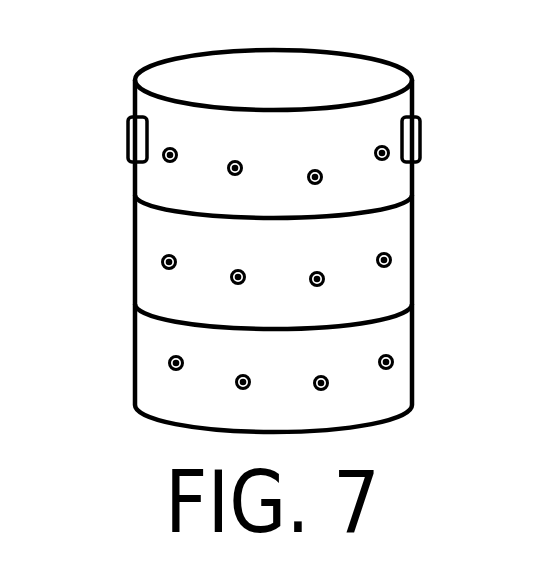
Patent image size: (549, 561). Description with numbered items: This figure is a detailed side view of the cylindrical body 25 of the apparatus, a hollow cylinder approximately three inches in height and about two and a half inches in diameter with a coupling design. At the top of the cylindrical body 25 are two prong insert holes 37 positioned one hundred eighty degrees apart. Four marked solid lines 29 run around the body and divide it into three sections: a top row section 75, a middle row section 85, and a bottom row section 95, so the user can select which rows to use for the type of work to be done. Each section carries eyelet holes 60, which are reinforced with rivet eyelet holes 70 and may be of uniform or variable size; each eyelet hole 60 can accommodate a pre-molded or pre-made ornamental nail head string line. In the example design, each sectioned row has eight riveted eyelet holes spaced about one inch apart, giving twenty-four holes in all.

The cylindrical body 25 is at (275, 238).
The marked solid lines 29 is at (135, 98).
The prong insert holes 37 is at (137, 146).
The eyelet holes 60 is at (392, 262).
The rivet eyelet holes 70 is at (168, 365).
The top row section 75 is at (343, 177).
The middle row section 85 is at (345, 277).
The bottom row section 95 is at (350, 385).